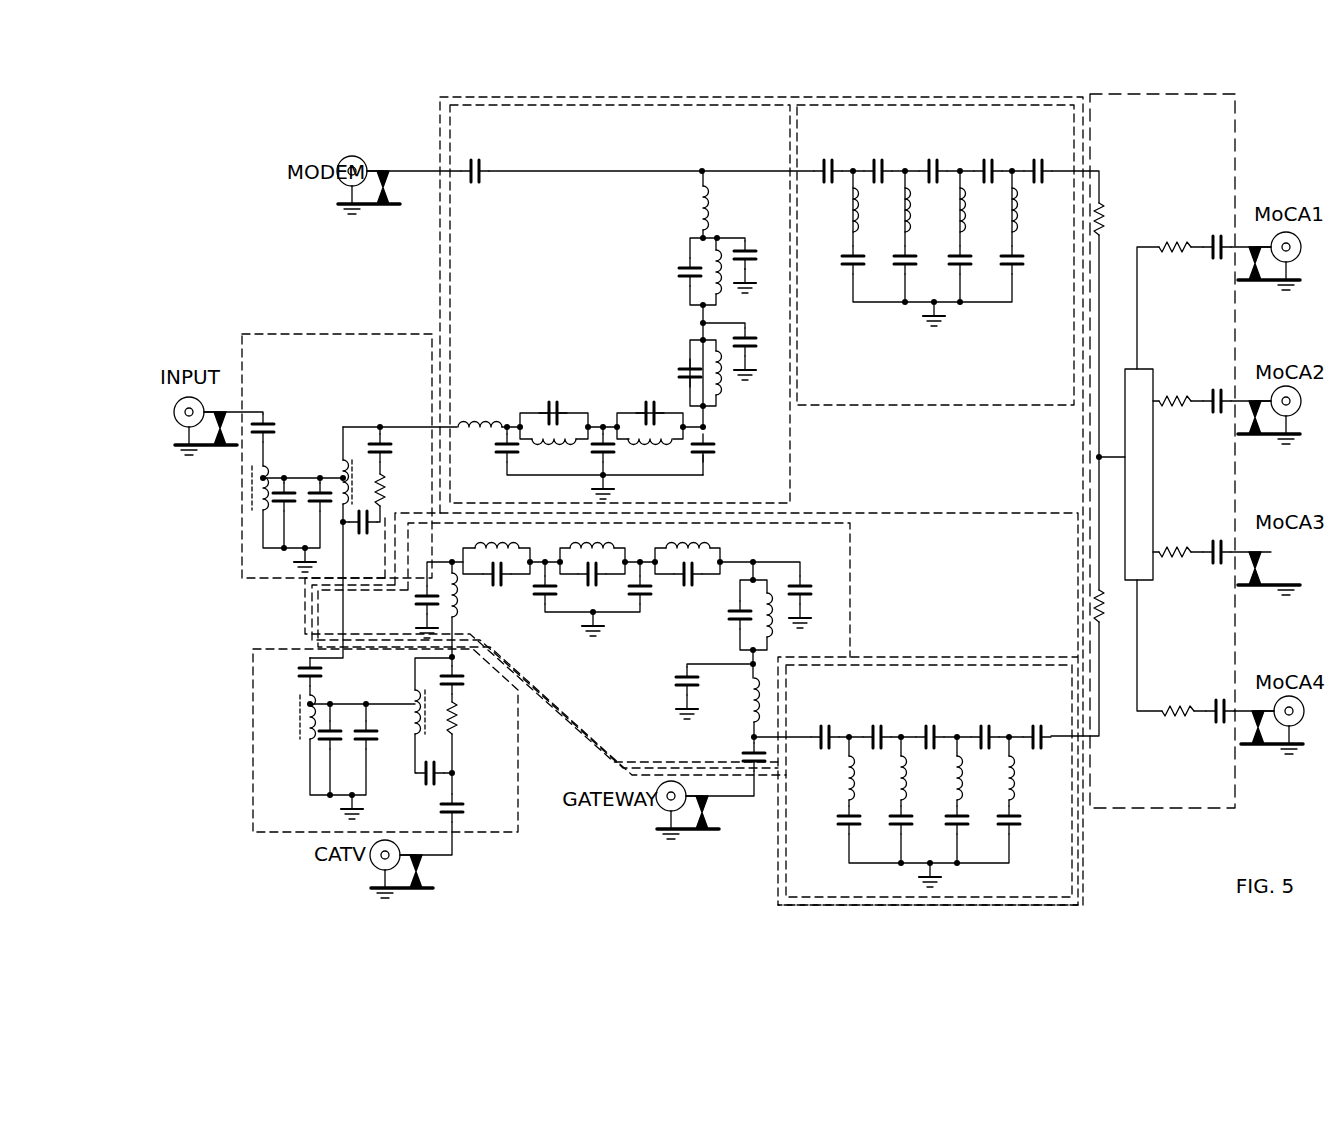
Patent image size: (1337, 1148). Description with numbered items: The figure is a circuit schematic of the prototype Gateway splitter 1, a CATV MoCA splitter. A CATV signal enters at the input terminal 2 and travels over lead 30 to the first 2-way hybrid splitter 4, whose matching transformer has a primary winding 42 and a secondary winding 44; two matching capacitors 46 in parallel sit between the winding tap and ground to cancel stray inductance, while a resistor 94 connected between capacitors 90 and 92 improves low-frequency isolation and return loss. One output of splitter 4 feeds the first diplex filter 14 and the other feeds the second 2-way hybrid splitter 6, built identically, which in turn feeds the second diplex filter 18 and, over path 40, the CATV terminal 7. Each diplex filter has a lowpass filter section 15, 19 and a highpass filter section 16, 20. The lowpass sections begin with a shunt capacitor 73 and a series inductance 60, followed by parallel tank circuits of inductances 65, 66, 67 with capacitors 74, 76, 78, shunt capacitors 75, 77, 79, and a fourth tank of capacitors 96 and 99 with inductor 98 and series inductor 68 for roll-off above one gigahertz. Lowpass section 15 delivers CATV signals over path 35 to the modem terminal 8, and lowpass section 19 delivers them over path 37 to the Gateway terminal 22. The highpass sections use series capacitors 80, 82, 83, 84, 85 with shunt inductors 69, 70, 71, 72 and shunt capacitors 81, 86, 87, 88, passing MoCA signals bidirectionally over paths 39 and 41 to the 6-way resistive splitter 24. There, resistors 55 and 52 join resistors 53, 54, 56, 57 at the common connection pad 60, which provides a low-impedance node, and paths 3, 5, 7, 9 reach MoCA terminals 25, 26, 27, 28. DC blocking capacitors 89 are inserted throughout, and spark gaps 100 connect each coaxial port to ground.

The MoCA bypass system 1 is at (216, 224).
The input terminal 2 is at (182, 427).
The electrically conductive path 3 is at (1258, 247).
The 2-way hybrid splitter 4 is at (381, 383).
The electrically conductive path 5 is at (1258, 401).
The second 2-way hybrid splitter 6 is at (271, 814).
The CATV terminal 7 is at (372, 872).
The modem terminal 8 is at (347, 156).
The electrically conductive path 9 is at (1260, 711).
The first diplex filter 14 is at (954, 465).
The lowpass filter section 15 is at (604, 296).
The highpass filter section 16 is at (973, 336).
The second diplex filter 18 is at (1005, 560).
The lowpass filter section 19 is at (610, 662).
The highpass filter section 20 is at (1024, 766).
The Gateway terminal 22 is at (662, 810).
The 6-way resistive splitter 24 is at (1176, 128).
The MoCA terminal 25 is at (1296, 256).
The MoCA terminal 26 is at (1302, 410).
The MoCA terminal 27 is at (1300, 561).
The MoCA terminal 28 is at (1303, 720).
The electrically conductive lead 30 is at (238, 407).
The electrically conductive path 35 is at (386, 170).
The electrical conductive path 37 is at (748, 800).
The electrically conductive path 39 is at (1104, 178).
The electrically conductive path 40 is at (452, 862).
The electrically conductive path 41 is at (1104, 736).
The primary winding 42 is at (268, 476).
The secondary winding 44 is at (340, 468).
The capacitor 46 is at (316, 508).
The resistor 52 is at (1104, 612).
The resistor 53 is at (1174, 253).
The resistor 54 is at (1176, 394).
The resistor 55 is at (1106, 220).
The resistor 56 is at (1176, 545).
The resistor 57 is at (1176, 704).
The connection pad 60 is at (478, 422).
The inductance 65 is at (556, 444).
The inductance 66 is at (660, 444).
The inductance 67 is at (724, 390).
The inductor 68 is at (716, 205).
The inductor 69 is at (846, 214).
The inductor 70 is at (898, 214).
The inductor 71 is at (953, 214).
The inductor 72 is at (1018, 216).
The capacitor 73 is at (500, 452).
The capacitor 74 is at (553, 408).
The capacitor 75 is at (612, 454).
The capacitor 76 is at (647, 408).
The capacitor 77 is at (714, 450).
The capacitor 78 is at (686, 366).
The capacitor 79 is at (752, 346).
The capacitor 80 is at (826, 156).
The capacitor 81 is at (843, 270).
The capacitor 82 is at (878, 156).
The capacitor 83 is at (932, 156).
The capacitor 84 is at (988, 156).
The capacitor 85 is at (1038, 156).
The capacitor 86 is at (915, 268).
The capacitor 87 is at (968, 268).
The capacitor 88 is at (1020, 268).
The DC blocking capacitor 89 is at (476, 157).
The capacitor 90 is at (360, 536).
The capacitor 92 is at (390, 446).
The resistor 94 is at (388, 492).
The capacitor 96 is at (684, 268).
The inductor 98 is at (722, 288).
The capacitor 99 is at (748, 240).
The spark gap 100 is at (377, 198).